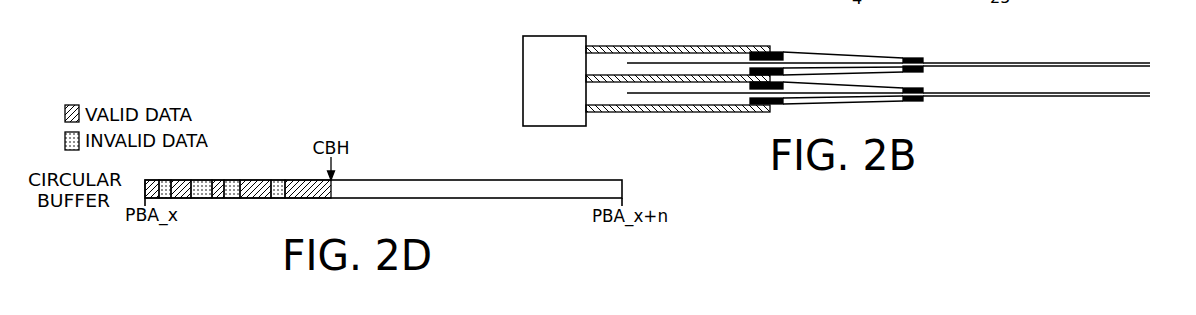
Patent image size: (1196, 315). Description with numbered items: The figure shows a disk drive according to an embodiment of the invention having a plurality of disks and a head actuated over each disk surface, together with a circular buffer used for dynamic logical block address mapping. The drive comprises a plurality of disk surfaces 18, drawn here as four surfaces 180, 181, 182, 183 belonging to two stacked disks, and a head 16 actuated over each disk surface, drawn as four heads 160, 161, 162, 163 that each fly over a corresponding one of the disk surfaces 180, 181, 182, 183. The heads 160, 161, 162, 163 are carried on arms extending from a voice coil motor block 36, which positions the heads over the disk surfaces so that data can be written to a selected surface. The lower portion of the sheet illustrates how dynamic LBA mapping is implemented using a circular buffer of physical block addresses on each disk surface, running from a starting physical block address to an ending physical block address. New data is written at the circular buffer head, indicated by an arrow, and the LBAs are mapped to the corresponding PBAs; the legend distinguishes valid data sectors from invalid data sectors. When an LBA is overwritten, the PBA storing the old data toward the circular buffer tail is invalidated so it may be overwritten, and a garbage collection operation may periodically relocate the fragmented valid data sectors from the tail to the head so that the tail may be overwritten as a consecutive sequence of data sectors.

The voice coil motor (VCM) 36 is at (553, 36).
The head 16 is at (944, 81).
The head 160 is at (918, 58).
The head 161 is at (925, 70).
The head 162 is at (925, 91).
The head 163 is at (922, 100).
The disk surface 18 is at (1036, 81).
The disk surface 180 is at (1052, 63).
The disk surface 181 is at (1092, 66).
The disk surface 182 is at (1078, 93).
The disk surface 183 is at (1092, 96).